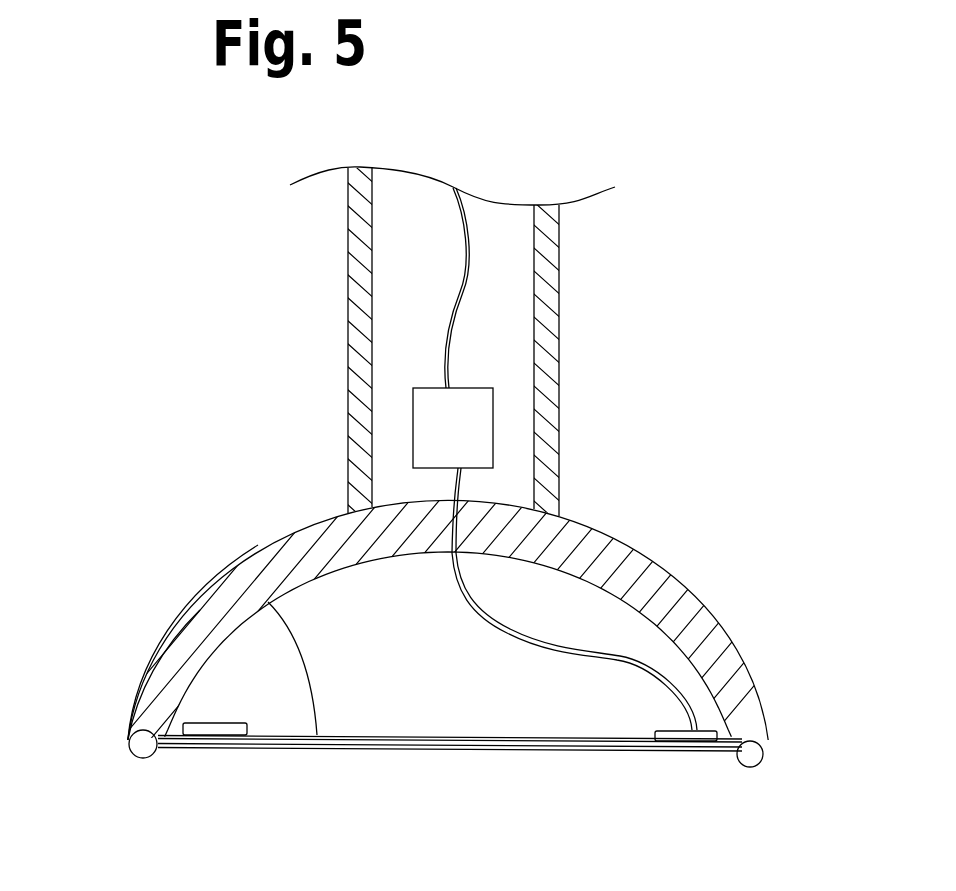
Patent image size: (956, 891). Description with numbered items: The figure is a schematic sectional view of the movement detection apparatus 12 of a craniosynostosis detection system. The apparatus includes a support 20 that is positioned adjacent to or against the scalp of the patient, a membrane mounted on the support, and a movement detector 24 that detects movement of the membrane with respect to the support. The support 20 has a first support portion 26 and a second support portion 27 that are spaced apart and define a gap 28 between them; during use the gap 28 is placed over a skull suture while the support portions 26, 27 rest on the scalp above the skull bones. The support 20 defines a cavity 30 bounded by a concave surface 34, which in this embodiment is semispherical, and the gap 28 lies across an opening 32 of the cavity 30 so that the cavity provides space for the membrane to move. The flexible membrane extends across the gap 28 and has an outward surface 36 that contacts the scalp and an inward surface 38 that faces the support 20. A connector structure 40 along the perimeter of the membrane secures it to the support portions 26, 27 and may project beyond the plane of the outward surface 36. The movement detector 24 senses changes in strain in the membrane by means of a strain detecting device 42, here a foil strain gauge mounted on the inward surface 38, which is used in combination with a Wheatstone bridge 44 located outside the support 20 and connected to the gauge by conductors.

The movement detection apparatus 12 is at (613, 373).
The support 20 is at (478, 445).
The movement detector 24 is at (420, 787).
The first support portion 26 is at (176, 636).
The second support portion 27 is at (719, 620).
The gap 28 is at (450, 806).
The cavity 30 is at (184, 637).
The opening 32 is at (304, 764).
The concave surface 34 is at (378, 560).
The outward surface 36 is at (415, 755).
The inward surface 38 is at (212, 737).
The connector structure 40 is at (122, 746).
The strain detecting device 42 is at (249, 678).
The Wheatstone bridge 44 is at (452, 426).